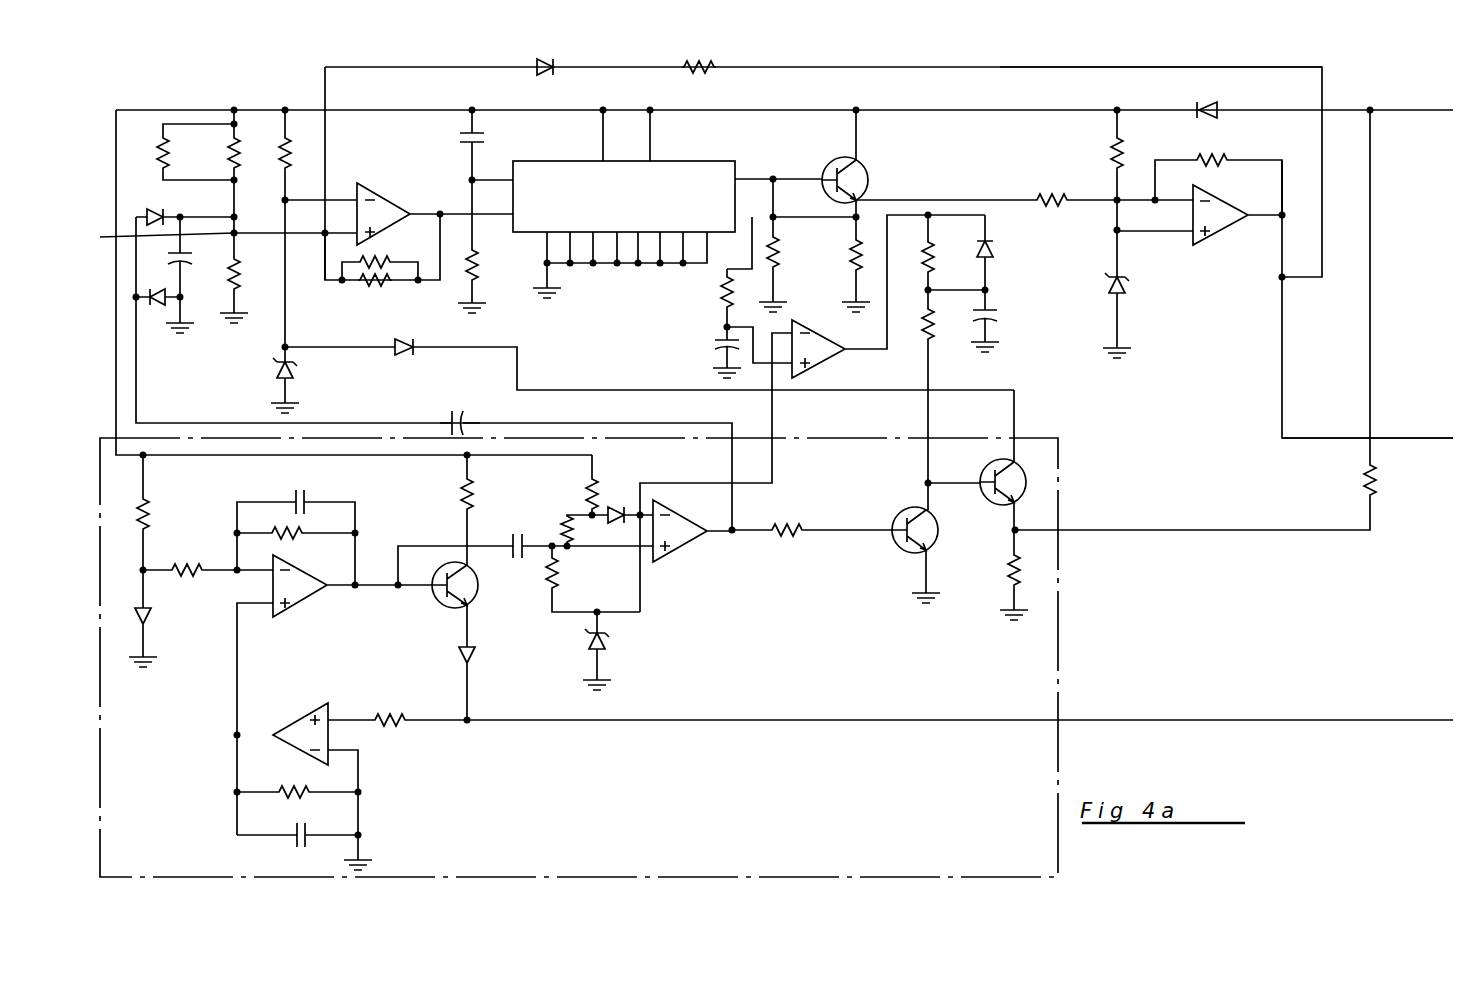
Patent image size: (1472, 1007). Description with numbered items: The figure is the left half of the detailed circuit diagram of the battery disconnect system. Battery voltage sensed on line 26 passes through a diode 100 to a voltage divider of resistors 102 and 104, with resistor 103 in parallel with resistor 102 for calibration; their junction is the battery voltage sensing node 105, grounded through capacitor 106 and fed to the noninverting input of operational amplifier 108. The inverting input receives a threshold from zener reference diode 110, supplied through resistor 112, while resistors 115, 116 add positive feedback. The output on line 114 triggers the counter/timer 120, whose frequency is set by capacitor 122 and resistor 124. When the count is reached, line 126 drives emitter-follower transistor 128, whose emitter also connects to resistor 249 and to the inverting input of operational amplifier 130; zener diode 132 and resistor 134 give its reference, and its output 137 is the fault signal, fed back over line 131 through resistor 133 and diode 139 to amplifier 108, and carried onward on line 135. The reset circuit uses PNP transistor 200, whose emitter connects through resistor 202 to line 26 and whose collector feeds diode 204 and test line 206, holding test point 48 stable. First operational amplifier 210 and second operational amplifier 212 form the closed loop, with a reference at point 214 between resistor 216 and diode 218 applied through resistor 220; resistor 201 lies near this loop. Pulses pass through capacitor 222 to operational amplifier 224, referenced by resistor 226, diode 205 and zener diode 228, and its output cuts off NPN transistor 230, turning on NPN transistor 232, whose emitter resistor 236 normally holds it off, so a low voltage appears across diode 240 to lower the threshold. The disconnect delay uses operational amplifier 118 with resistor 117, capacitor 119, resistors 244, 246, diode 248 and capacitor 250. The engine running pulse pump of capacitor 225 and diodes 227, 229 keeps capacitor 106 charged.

The line 26 is at (740, 110).
The test point 48 is at (468, 722).
The diode 100 is at (1206, 104).
The resistor 102 is at (232, 147).
The resistor 103 is at (160, 150).
The resistor 104 is at (241, 290).
The battery voltage sensing node 105 is at (208, 237).
The capacitor 106 is at (168, 257).
The operational amplifier 108 is at (386, 198).
The zener reference diode 110 is at (277, 372).
The resistor 112 is at (283, 150).
The line 114 is at (440, 213).
The resistor 115 is at (377, 261).
The resistor 116 is at (375, 283).
The resistor 117 is at (722, 300).
The operational amplifier 118 is at (805, 330).
The capacitor 119 is at (720, 343).
The counter/timer 120 is at (561, 161).
The capacitor 122 is at (460, 133).
The resistor 124 is at (478, 256).
The line 126 is at (773, 178).
The NPN emitter-follower transistor 128 is at (858, 170).
The operational amplifier 130 is at (1228, 235).
The line 131 is at (1070, 66).
The zener diode 132 is at (1128, 288).
The resistor 133 is at (702, 65).
The resistor 134 is at (1113, 153).
The line 135 is at (1322, 436).
The output 137 is at (1256, 214).
The diode 139 is at (545, 65).
The PNP transistor 200 is at (475, 598).
The resistor 201 is at (572, 545).
The resistor 202 is at (472, 495).
The diode 204 is at (475, 655).
The diode 205 is at (620, 525).
The test line 206 is at (712, 718).
The first operational amplifier 210 is at (300, 720).
The second operational amplifier 212 is at (300, 605).
The point 214 is at (145, 572).
The resistor 216 is at (148, 520).
The diode 218 is at (150, 615).
The resistor 220 is at (189, 565).
The capacitor 222 is at (517, 558).
The operational amplifier 224 is at (687, 510).
The capacitor 225 is at (490, 398).
The resistor 226 is at (600, 490).
The diode 227 is at (157, 210).
The zener diode 228 is at (605, 640).
The diode 229 is at (158, 305).
The NPN transistor 230 is at (900, 515).
The NPN transistor 232 is at (984, 470).
The resistor 236 is at (1376, 478).
The diode 240 is at (404, 355).
The resistor 244 is at (925, 245).
The resistor 246 is at (920, 330).
The diode 248 is at (993, 247).
The resistor 249 is at (770, 258).
The capacitor 250 is at (995, 315).